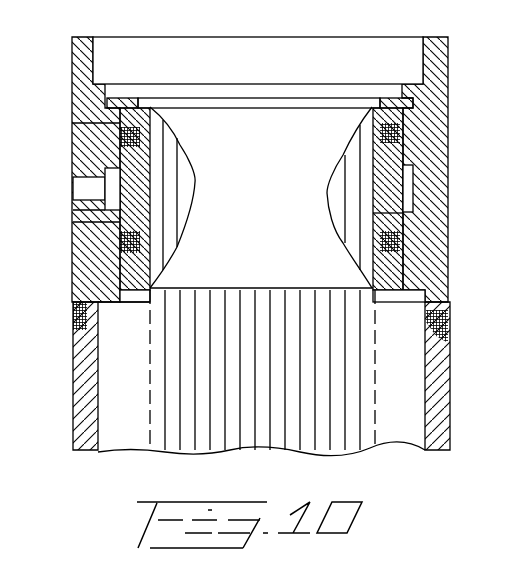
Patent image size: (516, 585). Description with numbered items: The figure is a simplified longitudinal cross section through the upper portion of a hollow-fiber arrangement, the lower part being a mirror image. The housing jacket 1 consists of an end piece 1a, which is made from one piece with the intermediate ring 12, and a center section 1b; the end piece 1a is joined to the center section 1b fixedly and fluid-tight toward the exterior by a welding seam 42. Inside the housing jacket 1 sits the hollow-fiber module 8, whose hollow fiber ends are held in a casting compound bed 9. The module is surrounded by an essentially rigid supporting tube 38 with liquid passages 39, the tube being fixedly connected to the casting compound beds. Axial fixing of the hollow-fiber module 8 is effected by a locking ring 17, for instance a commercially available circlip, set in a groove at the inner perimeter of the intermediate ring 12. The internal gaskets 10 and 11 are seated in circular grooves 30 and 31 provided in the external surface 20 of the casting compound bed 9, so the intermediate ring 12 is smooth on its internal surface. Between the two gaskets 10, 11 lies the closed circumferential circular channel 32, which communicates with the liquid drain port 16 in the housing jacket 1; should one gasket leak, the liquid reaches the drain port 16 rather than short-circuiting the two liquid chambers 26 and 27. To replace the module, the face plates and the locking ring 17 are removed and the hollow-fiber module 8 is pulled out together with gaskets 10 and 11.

The housing jacket 1 is at (450, 433).
The end piece 1a is at (437, 122).
The center section 1b is at (443, 387).
The hollow-fiber module 8 is at (170, 452).
The casting compound bed 9 is at (140, 278).
The internal gasket 10 is at (380, 128).
The internal gasket 11 is at (387, 245).
The intermediate ring 12 is at (385, 276).
The liquid drain port 16 is at (92, 192).
The locking ring 17 is at (122, 97).
The external surface 20 is at (117, 218).
The liquid chamber 26 is at (254, 66).
The liquid chamber 27 is at (131, 425).
The circular groove 30 is at (120, 132).
The circular groove 31 is at (120, 250).
The circular channel 32 is at (407, 188).
The supporting tube 38 is at (150, 337).
The liquid passages 39 is at (375, 410).
The welding seam 42 is at (448, 333).